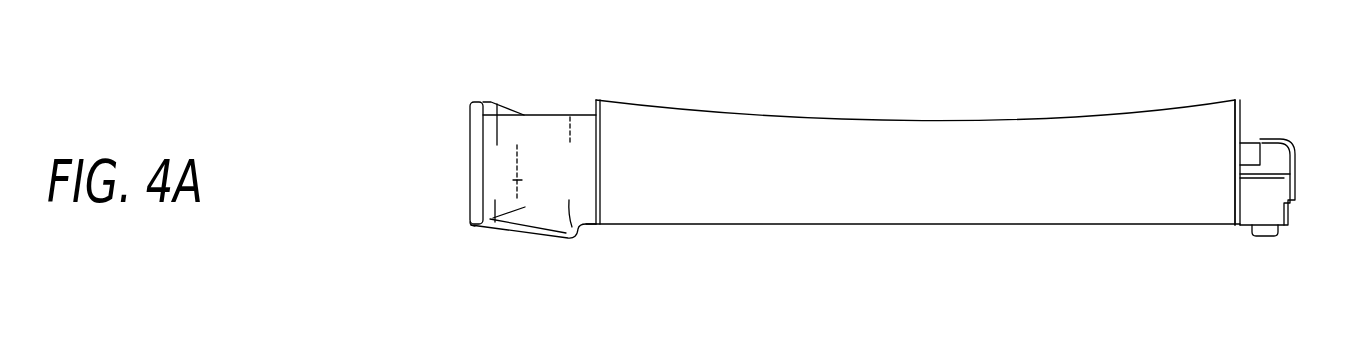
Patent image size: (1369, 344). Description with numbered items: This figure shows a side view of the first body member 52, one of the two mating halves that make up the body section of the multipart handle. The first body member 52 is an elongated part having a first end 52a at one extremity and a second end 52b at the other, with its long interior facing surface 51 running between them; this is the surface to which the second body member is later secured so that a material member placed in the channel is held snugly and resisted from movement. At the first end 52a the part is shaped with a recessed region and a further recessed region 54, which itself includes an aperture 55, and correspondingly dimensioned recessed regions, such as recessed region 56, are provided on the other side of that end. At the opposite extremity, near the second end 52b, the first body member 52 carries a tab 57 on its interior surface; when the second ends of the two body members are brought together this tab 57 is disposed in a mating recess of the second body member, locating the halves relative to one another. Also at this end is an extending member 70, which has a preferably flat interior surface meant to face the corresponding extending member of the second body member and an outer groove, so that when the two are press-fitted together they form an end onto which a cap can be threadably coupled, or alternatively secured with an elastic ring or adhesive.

The interior facing surface 51 is at (930, 225).
The first body member 52 is at (828, 203).
The first end 52a is at (552, 107).
The second end 52b is at (1232, 95).
The further recessed region 54 is at (518, 132).
The aperture 55 is at (533, 182).
The recessed region 56 is at (473, 227).
The tab 57 is at (1263, 238).
The extending member 70 is at (1267, 138).